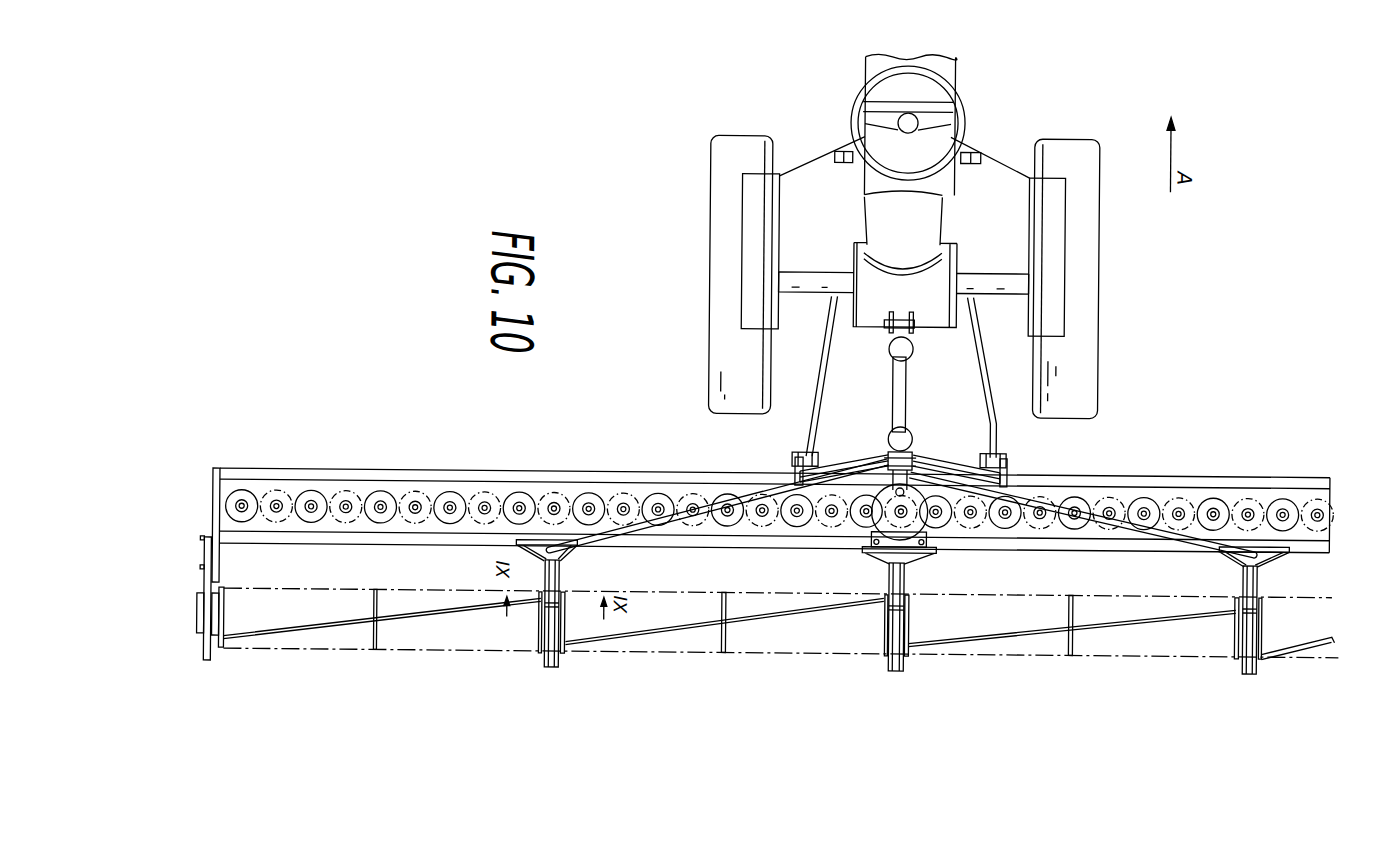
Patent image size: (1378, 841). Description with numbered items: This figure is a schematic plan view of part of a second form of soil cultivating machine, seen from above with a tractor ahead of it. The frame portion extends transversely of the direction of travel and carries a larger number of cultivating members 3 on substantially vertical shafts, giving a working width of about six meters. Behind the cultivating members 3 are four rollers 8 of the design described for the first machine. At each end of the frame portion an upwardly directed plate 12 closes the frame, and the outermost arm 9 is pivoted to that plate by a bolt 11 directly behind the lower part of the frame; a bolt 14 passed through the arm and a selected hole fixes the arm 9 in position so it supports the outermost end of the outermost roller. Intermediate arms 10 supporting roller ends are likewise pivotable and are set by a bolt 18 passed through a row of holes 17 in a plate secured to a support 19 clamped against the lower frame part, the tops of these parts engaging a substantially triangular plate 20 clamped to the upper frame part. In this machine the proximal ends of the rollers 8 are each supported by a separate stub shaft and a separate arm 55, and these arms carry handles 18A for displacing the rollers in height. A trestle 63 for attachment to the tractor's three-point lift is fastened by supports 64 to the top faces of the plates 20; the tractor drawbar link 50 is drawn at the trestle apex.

The cultivating members 3 is at (344, 488).
The rollers 8 is at (320, 648).
The outermost arm 9 is at (200, 592).
The intermediate arms 10 is at (224, 648).
The bolts 11 is at (206, 537).
The upwardly directed plates 12 is at (216, 467).
The bolt 14 is at (520, 468).
The holes 17 is at (418, 628).
The bolt 18 is at (222, 566).
The handles 18A is at (551, 664).
The support 19 is at (448, 489).
The plate 20 is at (517, 544).
The hitch link 50 is at (888, 498).
The arm 55 is at (560, 598).
The trestle 63 is at (957, 462).
The supports 64 is at (778, 497).